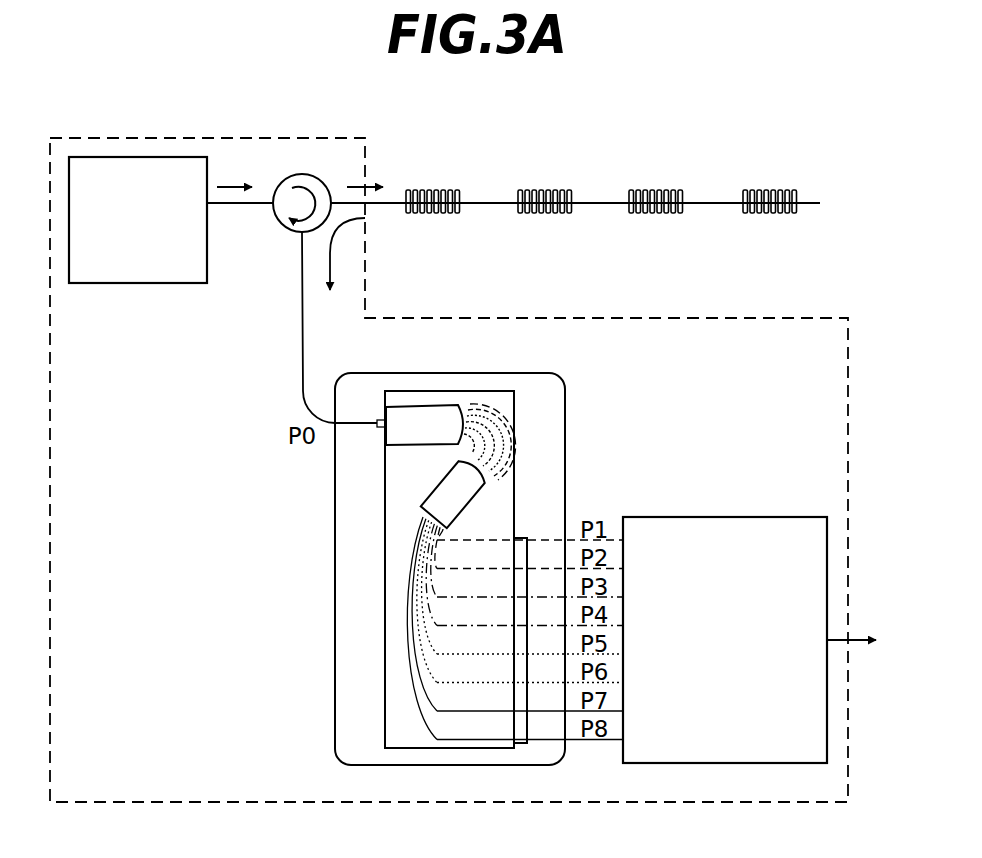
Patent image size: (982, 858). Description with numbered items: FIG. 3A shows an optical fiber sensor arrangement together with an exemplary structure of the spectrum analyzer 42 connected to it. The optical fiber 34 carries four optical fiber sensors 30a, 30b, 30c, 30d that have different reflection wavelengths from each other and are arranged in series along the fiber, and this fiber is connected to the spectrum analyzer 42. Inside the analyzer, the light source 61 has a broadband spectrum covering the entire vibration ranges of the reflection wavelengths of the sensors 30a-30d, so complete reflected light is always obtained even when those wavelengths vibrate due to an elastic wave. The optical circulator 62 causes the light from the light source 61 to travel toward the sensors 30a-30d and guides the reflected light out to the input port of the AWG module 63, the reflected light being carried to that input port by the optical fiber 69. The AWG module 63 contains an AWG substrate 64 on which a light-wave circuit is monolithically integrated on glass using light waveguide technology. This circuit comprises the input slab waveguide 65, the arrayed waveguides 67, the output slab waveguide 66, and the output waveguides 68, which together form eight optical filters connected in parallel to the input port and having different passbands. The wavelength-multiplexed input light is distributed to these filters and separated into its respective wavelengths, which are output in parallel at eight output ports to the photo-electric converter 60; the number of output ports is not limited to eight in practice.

The spectrum analyzer 42 is at (288, 135).
The light source 61 is at (158, 287).
The optical circulator 62 is at (282, 228).
The optical fiber 34 is at (815, 195).
The optical fiber sensor 30a is at (435, 187).
The optical fiber sensor 30b is at (545, 187).
The optical fiber sensor 30c is at (655, 187).
The optical fiber sensor 30d is at (770, 187).
The optical fiber 69 is at (302, 388).
The AWG module 63 is at (335, 545).
The AWG substrate 64 is at (385, 643).
The input slab waveguide 65 is at (433, 405).
The arrayed waveguides 67 is at (488, 415).
The output slab waveguide 66 is at (482, 493).
The output waveguides 68 is at (413, 690).
The photo-electric converter 60 is at (720, 515).